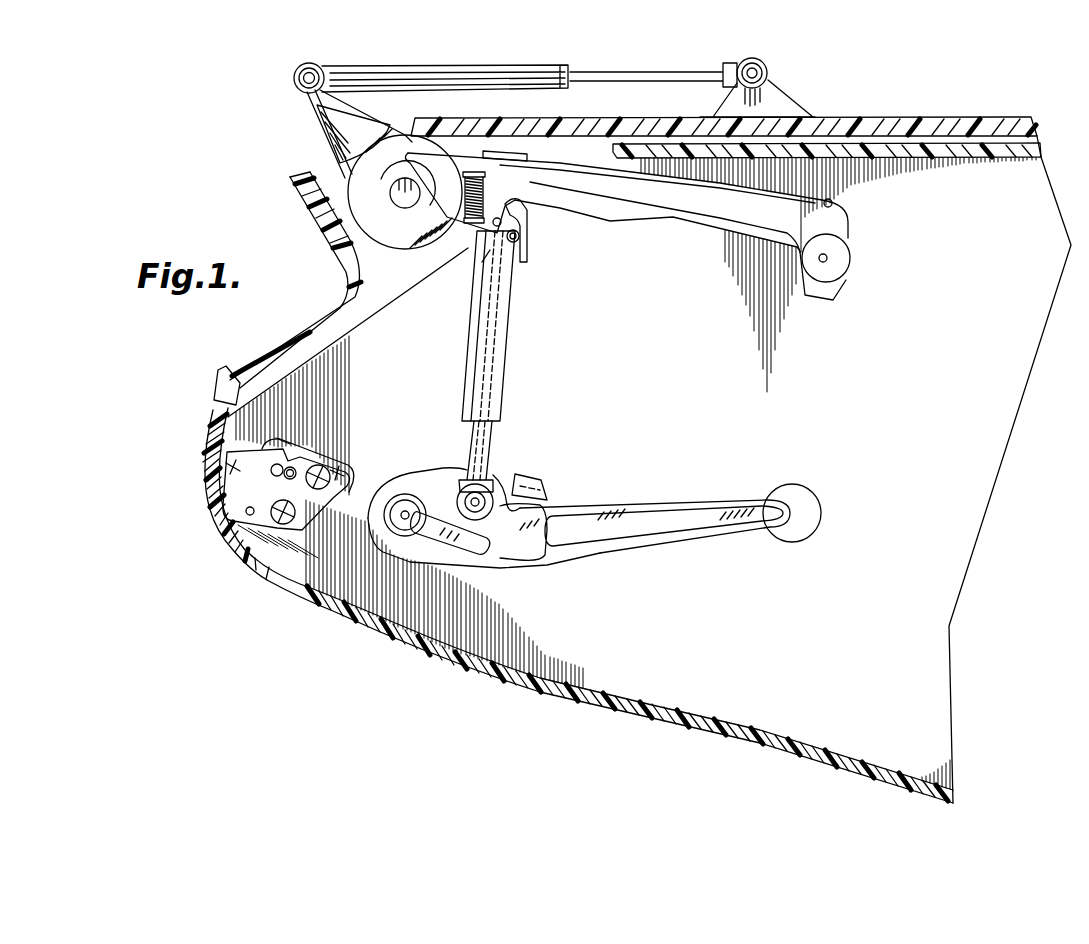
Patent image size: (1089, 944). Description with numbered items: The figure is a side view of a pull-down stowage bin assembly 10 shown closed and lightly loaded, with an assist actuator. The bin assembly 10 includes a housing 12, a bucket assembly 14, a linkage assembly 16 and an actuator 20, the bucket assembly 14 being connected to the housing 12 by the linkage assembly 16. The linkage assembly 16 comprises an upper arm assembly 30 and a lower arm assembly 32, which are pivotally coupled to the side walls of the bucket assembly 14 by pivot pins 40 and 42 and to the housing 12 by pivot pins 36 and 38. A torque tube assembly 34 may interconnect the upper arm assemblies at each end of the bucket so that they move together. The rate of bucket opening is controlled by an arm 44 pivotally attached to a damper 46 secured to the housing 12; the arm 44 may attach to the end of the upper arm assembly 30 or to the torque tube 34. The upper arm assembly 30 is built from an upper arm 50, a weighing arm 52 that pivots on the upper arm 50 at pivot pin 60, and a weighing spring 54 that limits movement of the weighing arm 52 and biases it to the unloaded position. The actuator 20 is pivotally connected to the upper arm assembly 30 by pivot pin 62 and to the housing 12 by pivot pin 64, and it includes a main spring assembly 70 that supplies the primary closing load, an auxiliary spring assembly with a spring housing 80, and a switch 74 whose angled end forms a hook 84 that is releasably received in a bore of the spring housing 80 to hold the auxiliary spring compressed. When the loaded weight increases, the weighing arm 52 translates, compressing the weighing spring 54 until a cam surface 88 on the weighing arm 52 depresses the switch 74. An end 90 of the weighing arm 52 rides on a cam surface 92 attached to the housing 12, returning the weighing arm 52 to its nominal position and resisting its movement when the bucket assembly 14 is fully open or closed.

The pull-down stowage bin assembly 10 is at (328, 676).
The housing 12 is at (882, 115).
The bucket assembly 14 is at (709, 743).
The linkage assembly 16 is at (585, 641).
The actuator 20 is at (512, 361).
The upper arm assembly 30 is at (661, 167).
The lower arm assembly 32 is at (693, 547).
The torque tube assembly 34 is at (374, 247).
The pivot pin 36 is at (401, 180).
The pivot pin 38 is at (403, 519).
The pivot pin 40 is at (827, 258).
The pivot pin 42 is at (817, 542).
The arm 44 is at (305, 112).
The damper 46 is at (480, 64).
The upper arm 50 is at (552, 147).
The weighing arm 52 is at (672, 215).
The weighing spring 54 is at (467, 224).
The pivot pin 60 is at (832, 204).
The pivot pin 62 is at (517, 236).
The pivot pin 64 is at (474, 506).
The main spring assembly 70 is at (500, 456).
The switch 74 is at (528, 256).
The spring housing 80 is at (508, 330).
The hook 84 is at (488, 268).
The cam surface 88 is at (503, 185).
The end of weighing arm 90 is at (451, 155).
The cam surface 92 is at (387, 203).